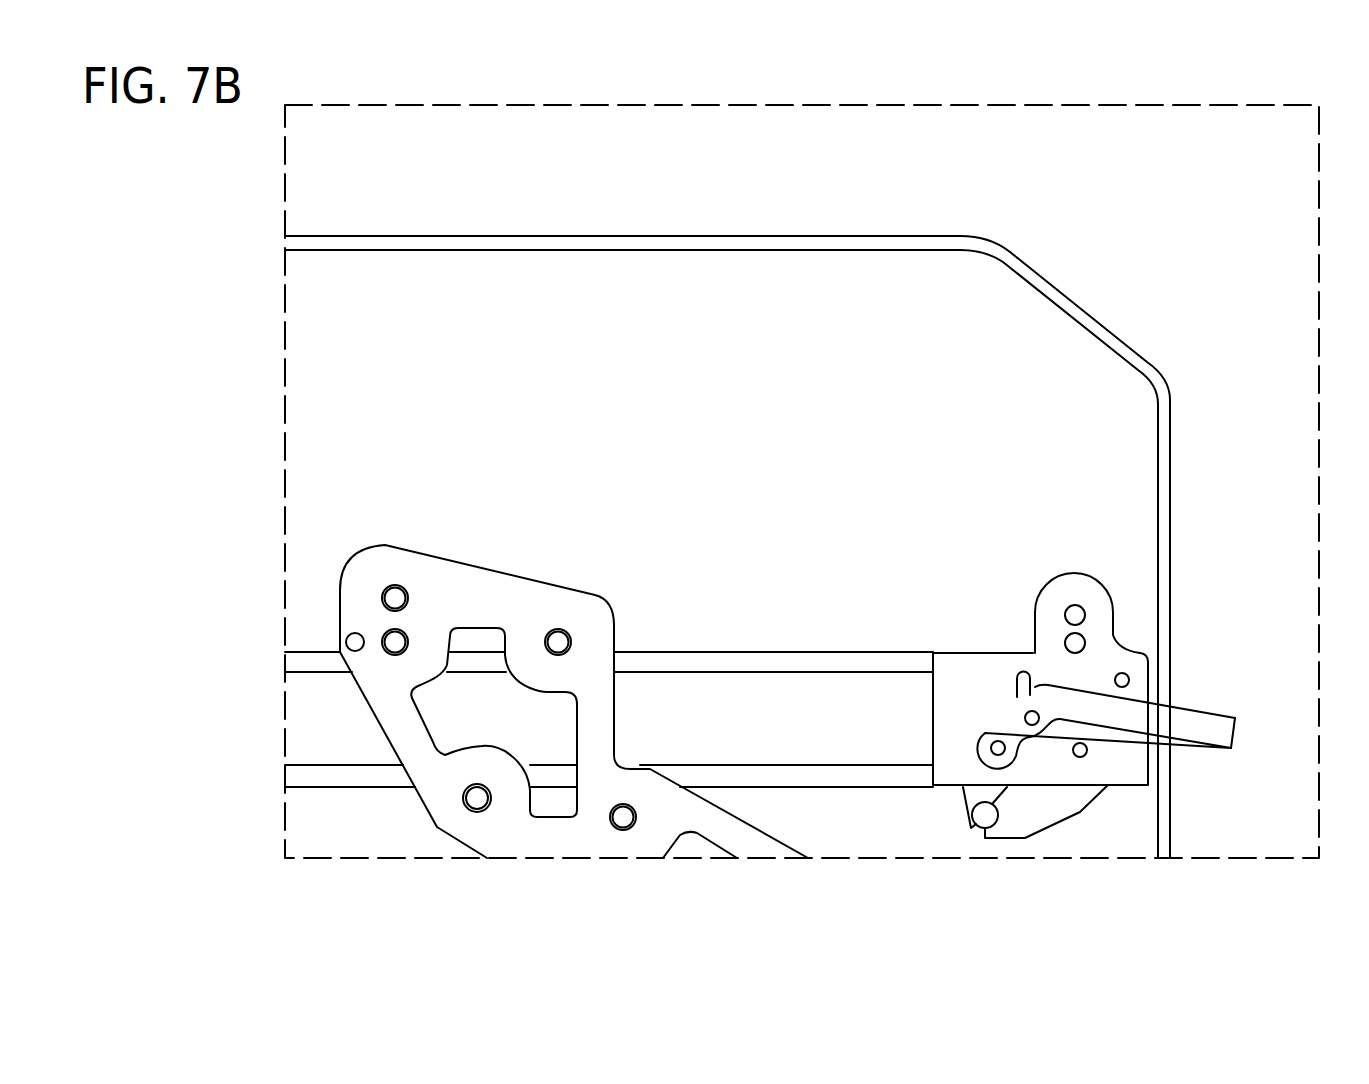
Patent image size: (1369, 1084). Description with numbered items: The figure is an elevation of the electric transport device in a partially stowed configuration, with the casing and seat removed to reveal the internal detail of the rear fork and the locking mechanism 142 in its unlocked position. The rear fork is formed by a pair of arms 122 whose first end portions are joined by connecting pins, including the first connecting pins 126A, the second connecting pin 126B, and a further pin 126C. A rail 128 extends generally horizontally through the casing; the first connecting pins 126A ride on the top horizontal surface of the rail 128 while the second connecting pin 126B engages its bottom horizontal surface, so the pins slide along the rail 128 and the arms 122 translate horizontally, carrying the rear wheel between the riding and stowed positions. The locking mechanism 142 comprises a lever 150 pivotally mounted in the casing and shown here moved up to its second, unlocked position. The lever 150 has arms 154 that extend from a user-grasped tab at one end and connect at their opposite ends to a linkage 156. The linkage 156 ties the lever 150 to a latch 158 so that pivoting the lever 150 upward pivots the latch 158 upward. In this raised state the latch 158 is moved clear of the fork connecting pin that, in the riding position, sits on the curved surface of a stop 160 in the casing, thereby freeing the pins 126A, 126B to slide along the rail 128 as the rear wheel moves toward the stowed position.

The arms 122 is at (545, 838).
The first connecting pins 126A is at (388, 638).
The second connecting pin 126B is at (472, 802).
The fastener hole 126C is at (622, 832).
The rail 128 is at (318, 722).
The locking mechanism 142 is at (1190, 663).
The lever 150 is at (1235, 759).
The arms 154 is at (1187, 722).
The linkage 156 is at (1005, 666).
The latch 158 is at (956, 816).
The stop 160 is at (1047, 808).